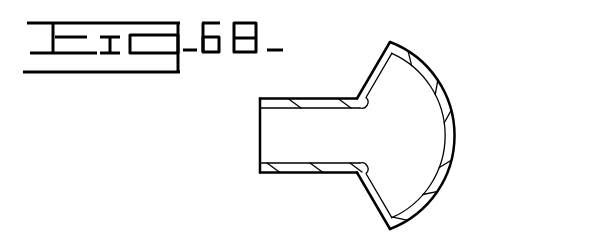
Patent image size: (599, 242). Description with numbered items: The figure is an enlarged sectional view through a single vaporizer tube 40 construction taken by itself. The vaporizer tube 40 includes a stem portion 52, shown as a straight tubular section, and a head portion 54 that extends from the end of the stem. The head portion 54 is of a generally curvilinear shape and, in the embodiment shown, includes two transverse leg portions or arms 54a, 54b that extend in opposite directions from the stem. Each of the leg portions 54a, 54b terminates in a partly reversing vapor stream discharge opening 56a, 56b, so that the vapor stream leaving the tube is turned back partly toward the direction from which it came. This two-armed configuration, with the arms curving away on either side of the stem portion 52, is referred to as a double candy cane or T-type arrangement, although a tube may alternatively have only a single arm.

The vaporizer tube 40 is at (300, 98).
The stem portion 52 is at (288, 174).
The head portion 54 is at (483, 123).
The leg portion 54a is at (427, 207).
The leg portion 54b is at (423, 62).
The vapor stream discharge opening 56a is at (375, 205).
The vapor stream discharge opening 56b is at (377, 66).